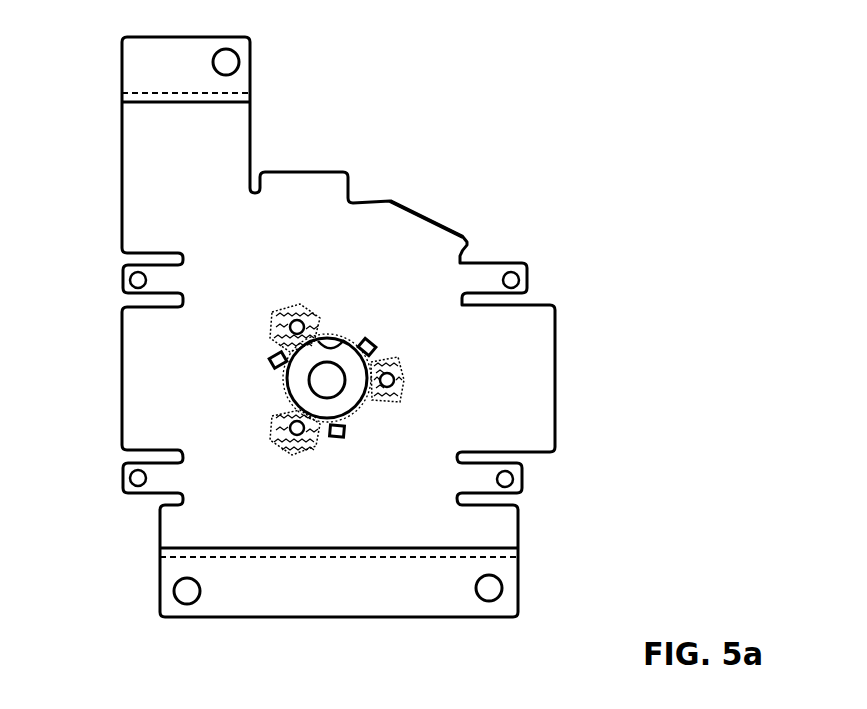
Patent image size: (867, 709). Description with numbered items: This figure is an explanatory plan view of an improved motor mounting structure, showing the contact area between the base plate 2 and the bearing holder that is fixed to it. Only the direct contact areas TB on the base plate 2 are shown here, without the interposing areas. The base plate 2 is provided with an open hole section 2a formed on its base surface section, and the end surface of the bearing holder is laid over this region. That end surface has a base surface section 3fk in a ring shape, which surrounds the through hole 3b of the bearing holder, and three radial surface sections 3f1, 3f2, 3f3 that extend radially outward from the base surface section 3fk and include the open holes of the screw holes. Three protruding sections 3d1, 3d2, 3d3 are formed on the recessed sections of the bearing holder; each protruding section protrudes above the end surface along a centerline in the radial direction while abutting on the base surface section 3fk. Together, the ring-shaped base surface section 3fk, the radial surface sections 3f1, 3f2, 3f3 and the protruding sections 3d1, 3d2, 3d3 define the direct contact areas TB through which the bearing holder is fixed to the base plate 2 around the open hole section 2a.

The base plate 2 is at (307, 235).
The open hole section 2a is at (345, 337).
The direct contact area TB is at (627, 218).
The base surface section 3fk is at (297, 378).
The through hole 3b is at (327, 380).
The protruding section 3d1 is at (375, 345).
The protruding section 3d2 is at (337, 435).
The protruding section 3d3 is at (278, 355).
The radial surface section 3f1 is at (405, 365).
The radial surface section 3f2 is at (325, 445).
The radial surface section 3f3 is at (309, 297).